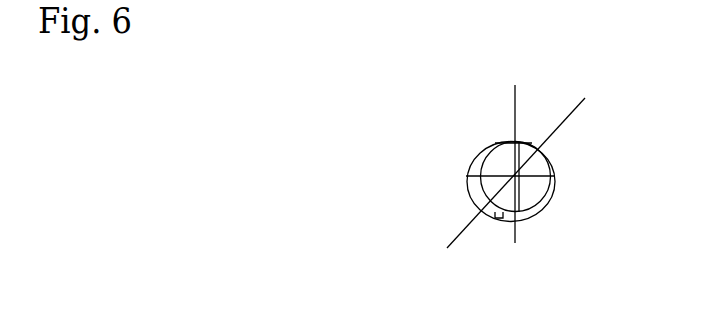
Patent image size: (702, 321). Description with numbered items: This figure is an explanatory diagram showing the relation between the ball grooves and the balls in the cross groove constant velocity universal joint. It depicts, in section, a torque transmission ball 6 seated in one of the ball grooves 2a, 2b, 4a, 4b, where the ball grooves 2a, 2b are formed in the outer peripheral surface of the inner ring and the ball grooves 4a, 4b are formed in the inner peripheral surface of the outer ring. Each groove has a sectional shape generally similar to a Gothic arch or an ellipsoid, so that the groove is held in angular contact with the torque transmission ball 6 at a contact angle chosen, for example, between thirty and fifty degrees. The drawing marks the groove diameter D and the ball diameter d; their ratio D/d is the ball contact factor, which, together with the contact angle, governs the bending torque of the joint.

The ball groove 2a is at (528, 214).
The ball groove 2b is at (528, 214).
The ball groove 4a is at (528, 214).
The ball groove 4b is at (496, 212).
The torque transmission ball 6 is at (492, 168).
The ball diameter d is at (487, 147).
The groove diameter D is at (536, 219).